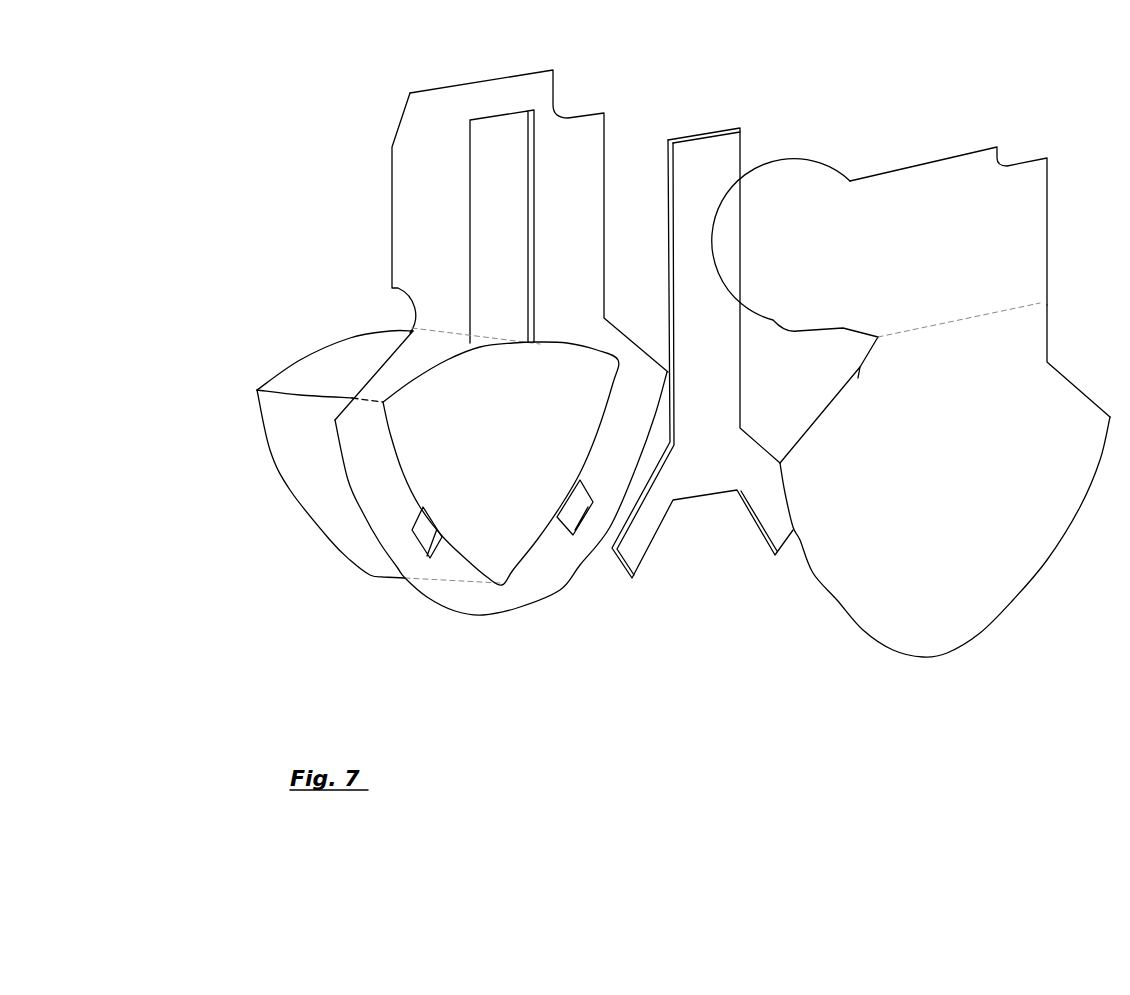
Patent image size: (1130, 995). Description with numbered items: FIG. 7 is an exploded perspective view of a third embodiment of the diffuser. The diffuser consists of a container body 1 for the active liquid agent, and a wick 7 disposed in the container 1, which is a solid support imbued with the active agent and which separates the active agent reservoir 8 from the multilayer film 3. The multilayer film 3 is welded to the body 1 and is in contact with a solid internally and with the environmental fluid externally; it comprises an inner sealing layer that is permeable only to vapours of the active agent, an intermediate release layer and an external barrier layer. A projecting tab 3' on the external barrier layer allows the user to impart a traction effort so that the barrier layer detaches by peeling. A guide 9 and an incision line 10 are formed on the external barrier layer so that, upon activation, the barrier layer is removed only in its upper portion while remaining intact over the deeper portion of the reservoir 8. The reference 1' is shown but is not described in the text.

The first plate 1' is at (518, 201).
The container body 1 is at (450, 442).
The active agent reservoir 8 is at (445, 472).
The wick 7 is at (697, 157).
The projecting tab 3' is at (879, 193).
The multilayer film 3 is at (945, 449).
The incision line 10 is at (982, 305).
The guide 9 is at (853, 347).